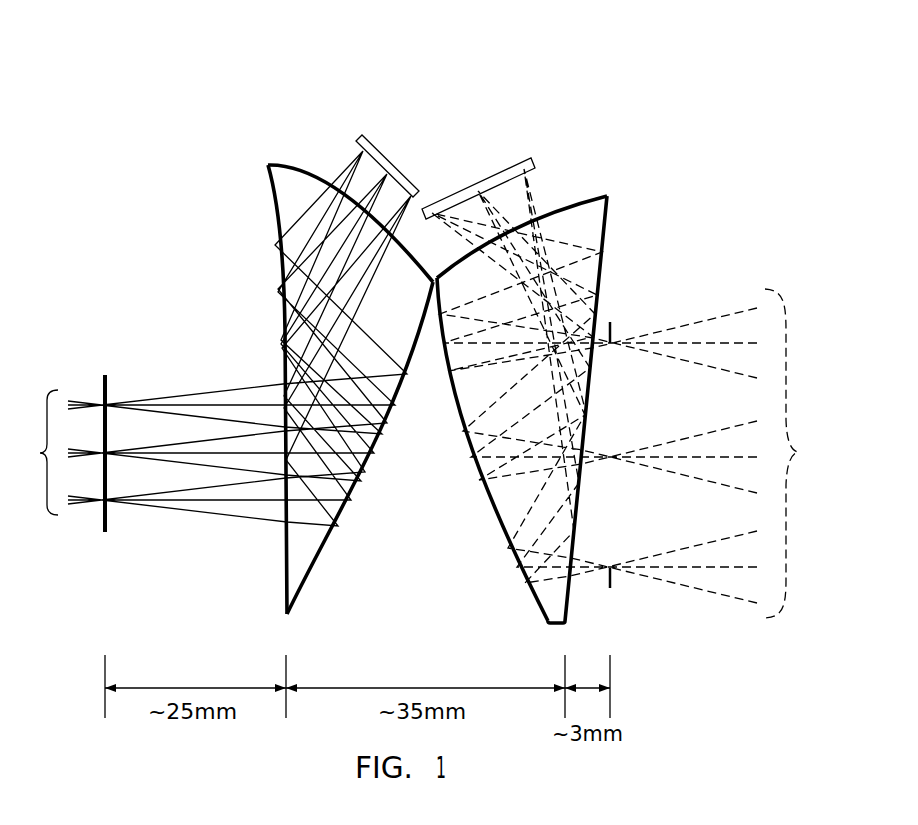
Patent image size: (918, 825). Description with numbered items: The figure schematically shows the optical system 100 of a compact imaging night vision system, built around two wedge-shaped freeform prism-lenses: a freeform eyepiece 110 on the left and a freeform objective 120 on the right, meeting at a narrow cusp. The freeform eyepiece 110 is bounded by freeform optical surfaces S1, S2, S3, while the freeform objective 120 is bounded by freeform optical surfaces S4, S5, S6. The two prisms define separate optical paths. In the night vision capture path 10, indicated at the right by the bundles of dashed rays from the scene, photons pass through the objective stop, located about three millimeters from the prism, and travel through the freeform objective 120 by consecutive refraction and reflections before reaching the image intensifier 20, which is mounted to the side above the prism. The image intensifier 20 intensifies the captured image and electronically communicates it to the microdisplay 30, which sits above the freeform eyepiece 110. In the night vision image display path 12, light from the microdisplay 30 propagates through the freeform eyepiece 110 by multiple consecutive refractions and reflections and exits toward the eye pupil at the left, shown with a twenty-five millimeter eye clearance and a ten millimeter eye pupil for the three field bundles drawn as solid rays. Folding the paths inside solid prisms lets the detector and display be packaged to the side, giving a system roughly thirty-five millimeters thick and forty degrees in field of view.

The optical system 100 is at (412, 320).
The freeform eyepiece 110 is at (250, 355).
The freeform objective 120 is at (594, 369).
The night vision capture path 10 is at (708, 466).
The night vision image display path 12 is at (85, 442).
The image intensifier 20 is at (497, 168).
The microdisplay 30 is at (386, 151).
The freeform optical surface S1 is at (284, 580).
The freeform optical surface S2 is at (329, 562).
The freeform optical surface S3 is at (302, 175).
The freeform optical surface S4 is at (584, 423).
The freeform optical surface S5 is at (489, 510).
The freeform optical surface S6 is at (599, 202).